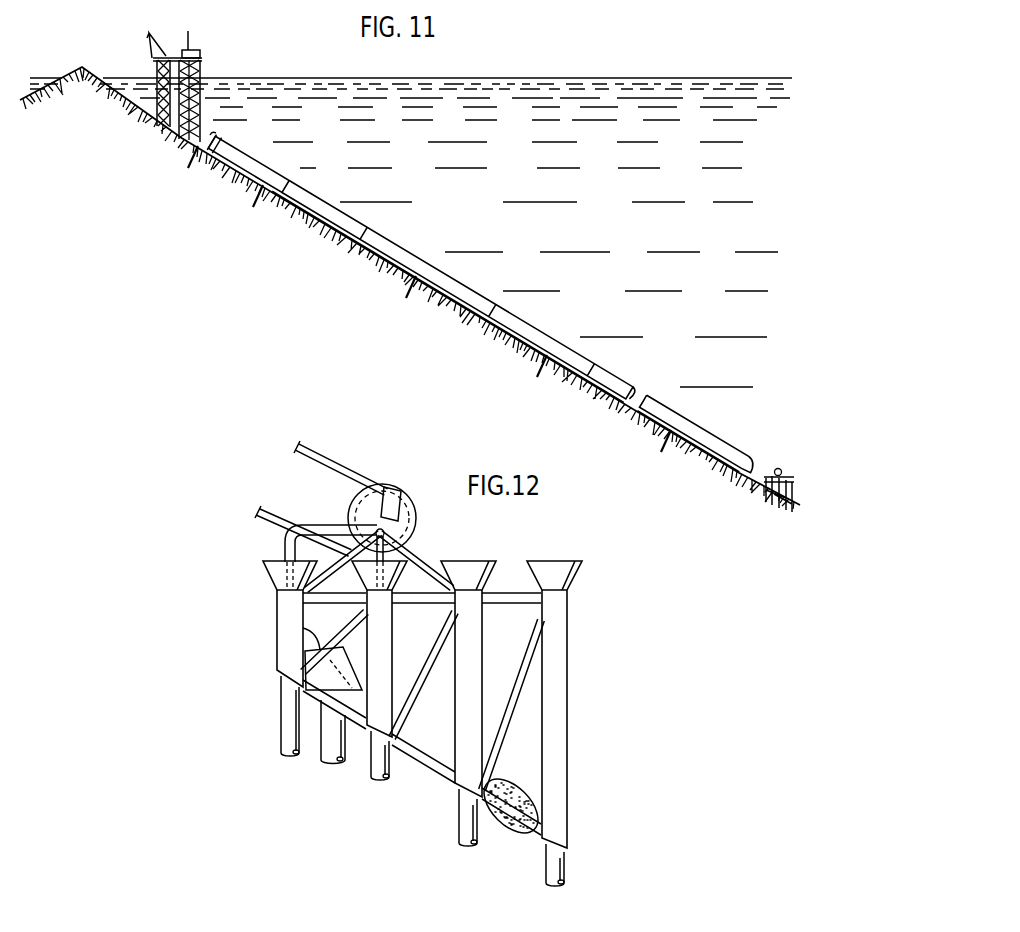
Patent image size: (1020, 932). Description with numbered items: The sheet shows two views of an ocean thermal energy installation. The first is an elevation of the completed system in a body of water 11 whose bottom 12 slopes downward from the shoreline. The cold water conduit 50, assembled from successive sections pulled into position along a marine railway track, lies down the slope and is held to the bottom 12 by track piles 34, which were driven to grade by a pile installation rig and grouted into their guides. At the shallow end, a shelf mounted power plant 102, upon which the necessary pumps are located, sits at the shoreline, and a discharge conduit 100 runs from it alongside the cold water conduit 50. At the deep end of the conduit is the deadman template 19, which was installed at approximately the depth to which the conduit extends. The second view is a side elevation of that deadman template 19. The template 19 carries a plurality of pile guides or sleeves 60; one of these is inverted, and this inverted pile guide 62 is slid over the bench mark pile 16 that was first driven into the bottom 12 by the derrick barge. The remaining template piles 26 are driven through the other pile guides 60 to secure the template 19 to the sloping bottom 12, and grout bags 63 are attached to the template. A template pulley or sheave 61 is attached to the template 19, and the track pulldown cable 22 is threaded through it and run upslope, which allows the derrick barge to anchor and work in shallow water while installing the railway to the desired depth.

In FIG. 11, the body of water 11 is at (558, 126).
In FIG. 11, the bottom 12 is at (279, 285).
In FIG. 11, the shelf mounted power plant 102 is at (202, 53).
In FIG. 11, the discharge conduit 100 is at (262, 166).
In FIG. 11, the cold water conduit 50 is at (427, 251).
In FIG. 11, the track piles 34 is at (198, 168).
In FIG. 11, the deadman template 19 is at (778, 469).
In FIG. 12, the deadman template 19 is at (537, 537).
In FIG. 12, the template pile guides 60 is at (290, 608).
In FIG. 12, the template piles 26 is at (287, 728).
In FIG. 12, the bench mark pile 16 is at (333, 752).
In FIG. 12, the track pulldown cable 22 is at (291, 476).
In FIG. 12, the template pulley 61 is at (388, 513).
In FIG. 12, the inverted pile guide 62 is at (328, 664).
In FIG. 12, the grout bags 63 is at (510, 790).